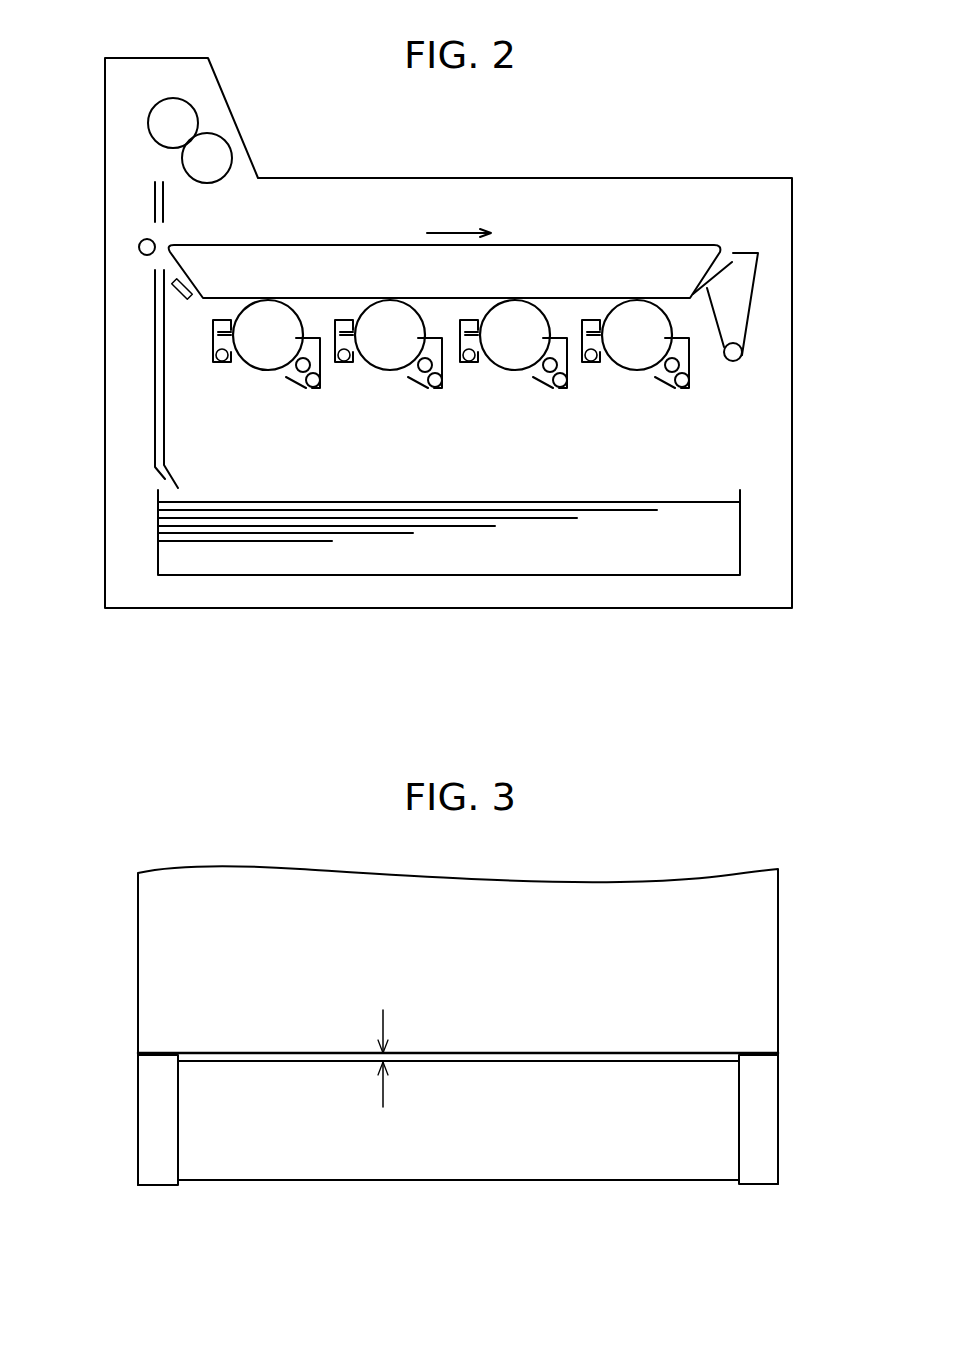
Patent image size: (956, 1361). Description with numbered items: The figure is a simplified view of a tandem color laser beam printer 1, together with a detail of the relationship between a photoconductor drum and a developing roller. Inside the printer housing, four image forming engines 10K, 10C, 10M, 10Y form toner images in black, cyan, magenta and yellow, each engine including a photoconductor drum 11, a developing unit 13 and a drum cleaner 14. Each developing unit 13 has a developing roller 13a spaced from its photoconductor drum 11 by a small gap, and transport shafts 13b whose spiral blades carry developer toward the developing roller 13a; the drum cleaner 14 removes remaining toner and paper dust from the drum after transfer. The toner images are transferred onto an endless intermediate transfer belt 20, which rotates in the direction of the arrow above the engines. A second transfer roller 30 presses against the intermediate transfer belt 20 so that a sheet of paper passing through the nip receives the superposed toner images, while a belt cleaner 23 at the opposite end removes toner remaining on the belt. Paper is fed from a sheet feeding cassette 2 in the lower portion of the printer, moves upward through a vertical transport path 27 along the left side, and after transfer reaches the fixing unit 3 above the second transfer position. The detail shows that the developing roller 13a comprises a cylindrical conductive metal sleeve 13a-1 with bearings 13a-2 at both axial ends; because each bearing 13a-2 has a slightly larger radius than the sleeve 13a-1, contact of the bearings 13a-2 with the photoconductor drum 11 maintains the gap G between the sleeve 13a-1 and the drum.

In FIG. 2, the color laser beam printer 1 is at (778, 136).
In FIG. 2, the sheet feeding cassette 2 is at (675, 575).
In FIG. 2, the fixing unit 3 is at (177, 98).
In FIG. 2, the intermediate transfer belt 20 is at (640, 245).
In FIG. 2, the belt cleaner 23 is at (757, 300).
In FIG. 2, the transport path 27 is at (155, 421).
In FIG. 2, the second transfer roller 30 is at (138, 247).
In FIG. 2, the image forming engine 10K is at (265, 374).
In FIG. 2, the image forming engine 10C is at (387, 374).
In FIG. 2, the image forming engine 10M is at (512, 374).
In FIG. 2, the image forming engine 10Y is at (634, 374).
In FIG. 2, the photoconductor drum 11 is at (243, 360).
In FIG. 3, the photoconductor drum 11 is at (779, 961).
In FIG. 2, the developing unit 13 is at (310, 338).
In FIG. 2, the developing roller 13a is at (300, 372).
In FIG. 3, the developing roller 13a is at (472, 1183).
In FIG. 2, the transport shaft 13b is at (318, 388).
In FIG. 2, the drum cleaner 14 is at (221, 320).
In FIG. 3, the sleeve 13a-1 is at (648, 1181).
In FIG. 3, the bearing 13a-2 is at (160, 1185).
In FIG. 3, the gap G is at (383, 1093).